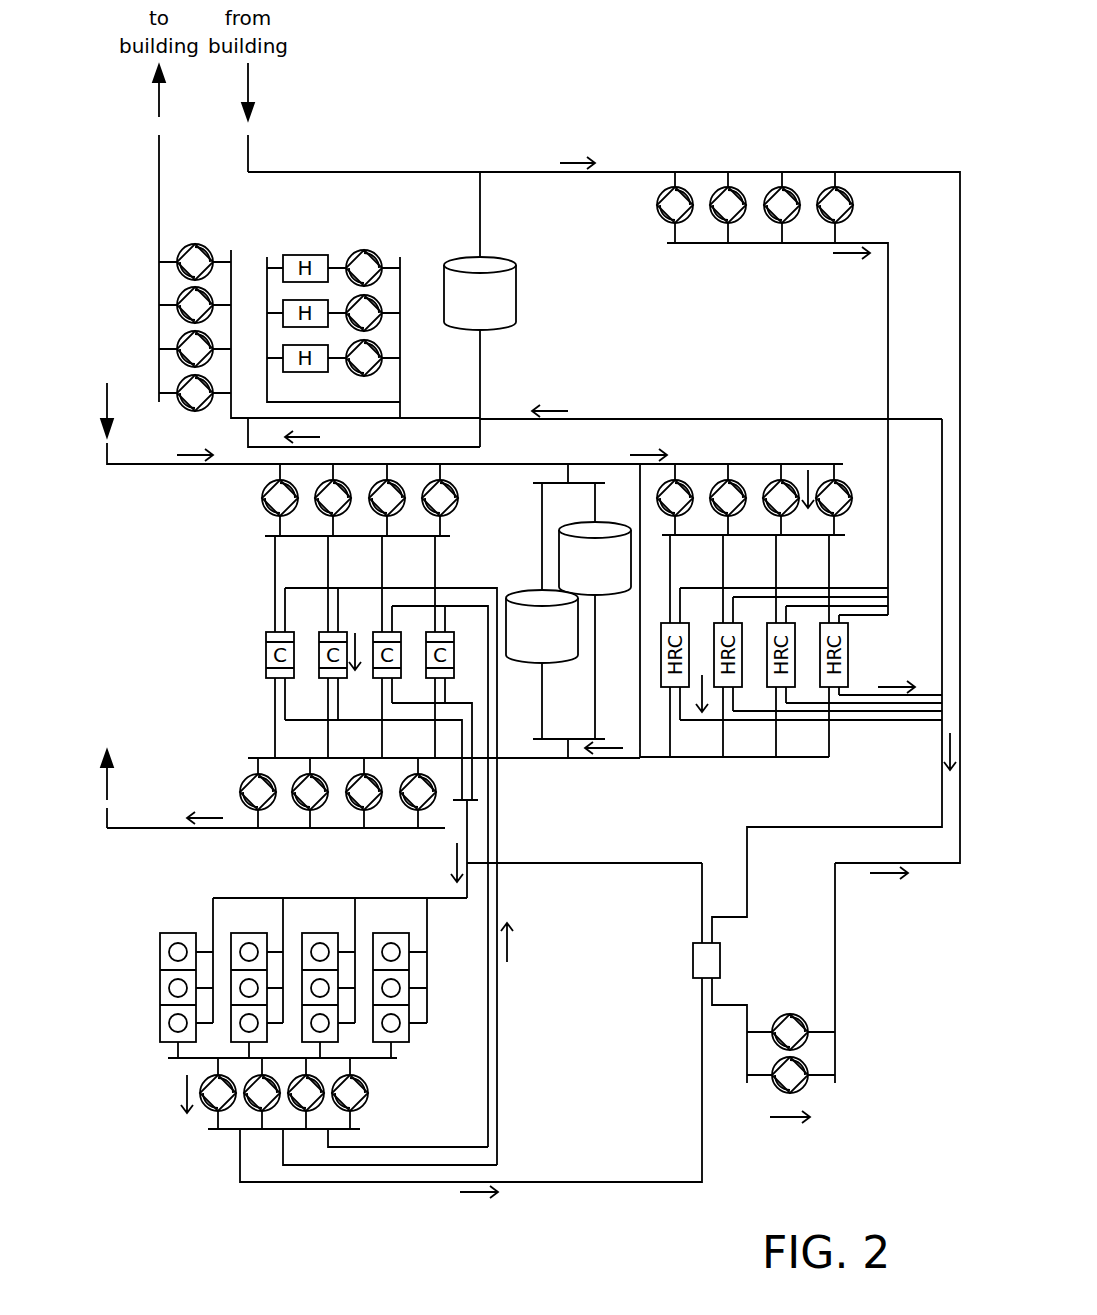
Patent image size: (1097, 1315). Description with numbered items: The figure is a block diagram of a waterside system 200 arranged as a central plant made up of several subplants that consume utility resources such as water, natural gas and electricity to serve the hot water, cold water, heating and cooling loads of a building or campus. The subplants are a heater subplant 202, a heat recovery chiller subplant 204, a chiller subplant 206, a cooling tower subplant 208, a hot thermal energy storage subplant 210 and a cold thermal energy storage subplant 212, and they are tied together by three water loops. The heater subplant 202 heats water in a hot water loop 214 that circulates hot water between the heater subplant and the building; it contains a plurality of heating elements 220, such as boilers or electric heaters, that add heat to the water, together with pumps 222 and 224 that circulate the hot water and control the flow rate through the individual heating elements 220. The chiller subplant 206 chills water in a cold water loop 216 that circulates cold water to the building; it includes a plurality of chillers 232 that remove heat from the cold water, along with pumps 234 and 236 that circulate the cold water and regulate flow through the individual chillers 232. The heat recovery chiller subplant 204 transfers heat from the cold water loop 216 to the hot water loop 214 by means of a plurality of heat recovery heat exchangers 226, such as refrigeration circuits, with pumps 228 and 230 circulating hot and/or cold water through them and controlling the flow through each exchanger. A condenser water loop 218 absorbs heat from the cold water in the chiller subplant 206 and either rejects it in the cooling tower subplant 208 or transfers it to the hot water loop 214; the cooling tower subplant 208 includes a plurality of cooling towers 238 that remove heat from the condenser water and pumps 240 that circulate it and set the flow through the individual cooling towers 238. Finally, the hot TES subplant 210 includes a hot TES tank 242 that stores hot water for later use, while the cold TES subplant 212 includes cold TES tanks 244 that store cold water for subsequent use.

The waterside system 200 is at (845, 40).
The heater subplant 202 is at (360, 258).
The heat recovery chiller subplant 204 is at (798, 620).
The chiller subplant 206 is at (341, 673).
The cooling tower subplant 208 is at (259, 1013).
The hot thermal energy storage subplant 210 is at (533, 286).
The cold thermal energy storage subplant 212 is at (558, 610).
The hot water loop 214 is at (500, 339).
The cold water loop 216 is at (163, 467).
The condenser water loop 218 is at (692, 1184).
The heating elements 220 is at (293, 254).
The pumps 222 is at (205, 243).
The pumps 224 is at (382, 253).
The heat recovery heat exchangers 226 is at (850, 652).
The pumps 228 is at (849, 484).
The pumps 230 is at (852, 206).
The chillers 232 is at (266, 646).
The pumps 234 is at (242, 784).
The pumps 236 is at (262, 497).
The cooling towers 238 is at (409, 1033).
The pumps 240 is at (369, 1100).
The hot TES tank 242 is at (514, 276).
The cold TES tanks 244 is at (576, 526).